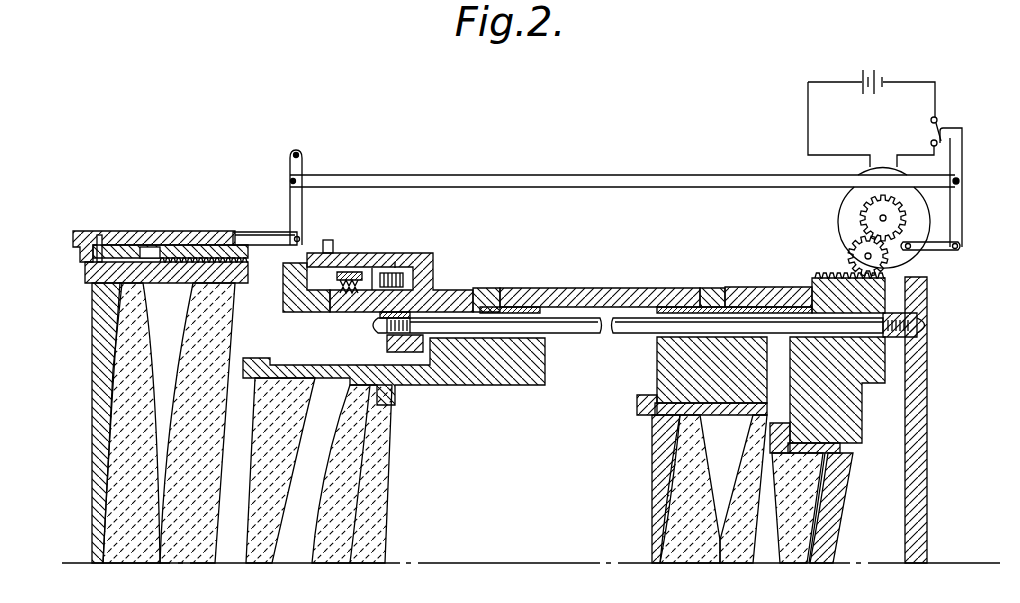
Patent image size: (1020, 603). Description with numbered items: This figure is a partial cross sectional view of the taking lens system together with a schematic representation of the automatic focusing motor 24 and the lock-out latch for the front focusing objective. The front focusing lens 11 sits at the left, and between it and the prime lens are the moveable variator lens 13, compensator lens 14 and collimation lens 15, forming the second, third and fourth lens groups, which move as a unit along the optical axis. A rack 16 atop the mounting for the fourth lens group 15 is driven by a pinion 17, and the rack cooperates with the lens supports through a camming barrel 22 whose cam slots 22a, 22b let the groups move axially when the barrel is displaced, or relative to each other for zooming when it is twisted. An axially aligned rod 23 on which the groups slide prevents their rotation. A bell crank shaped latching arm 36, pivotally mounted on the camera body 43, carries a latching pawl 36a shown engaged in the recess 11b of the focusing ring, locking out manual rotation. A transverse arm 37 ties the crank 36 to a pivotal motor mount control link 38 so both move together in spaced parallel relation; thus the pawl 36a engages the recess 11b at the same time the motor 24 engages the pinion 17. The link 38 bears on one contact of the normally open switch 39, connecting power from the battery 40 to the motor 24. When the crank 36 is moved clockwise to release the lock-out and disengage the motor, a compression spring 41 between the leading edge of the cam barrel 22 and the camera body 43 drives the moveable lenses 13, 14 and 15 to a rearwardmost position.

The front focusing lens 11 is at (92, 407).
The recess 11b is at (240, 230).
The variator lens 13 is at (395, 407).
The compensator lens 14 is at (643, 403).
The collimation lens 15 is at (862, 440).
The rack 16 is at (822, 273).
The pinion 17 is at (847, 258).
The camming barrel 22 is at (588, 288).
The cam slot 22a is at (493, 288).
The cam slot 22b is at (718, 287).
The axially aligned rod 23 is at (637, 334).
The automatic focusing motor 24 is at (840, 219).
The latching arm 36 is at (303, 162).
The latching pawl 36a is at (270, 236).
The transverse arm 37 is at (605, 175).
The motor mount control link 38 is at (957, 225).
The switch 39 is at (940, 119).
The battery 40 is at (865, 70).
The spring 41 is at (350, 277).
The camera body 43 is at (929, 392).